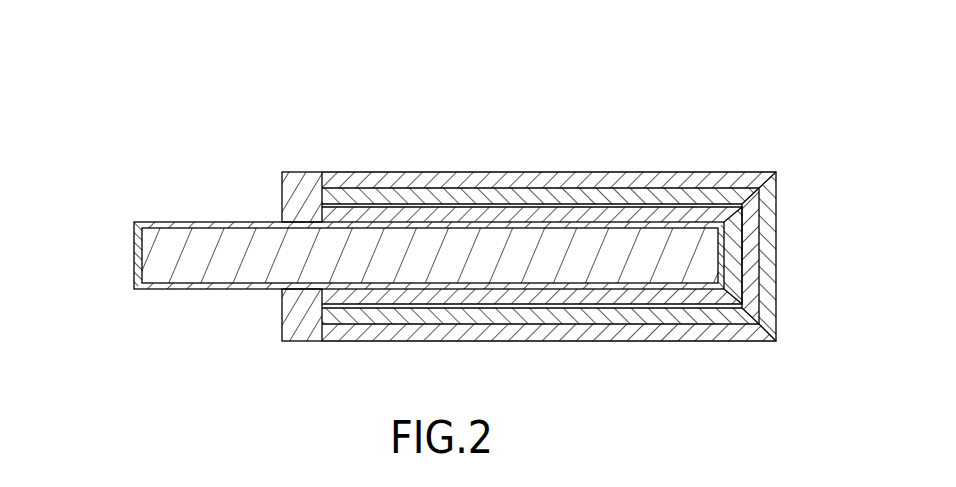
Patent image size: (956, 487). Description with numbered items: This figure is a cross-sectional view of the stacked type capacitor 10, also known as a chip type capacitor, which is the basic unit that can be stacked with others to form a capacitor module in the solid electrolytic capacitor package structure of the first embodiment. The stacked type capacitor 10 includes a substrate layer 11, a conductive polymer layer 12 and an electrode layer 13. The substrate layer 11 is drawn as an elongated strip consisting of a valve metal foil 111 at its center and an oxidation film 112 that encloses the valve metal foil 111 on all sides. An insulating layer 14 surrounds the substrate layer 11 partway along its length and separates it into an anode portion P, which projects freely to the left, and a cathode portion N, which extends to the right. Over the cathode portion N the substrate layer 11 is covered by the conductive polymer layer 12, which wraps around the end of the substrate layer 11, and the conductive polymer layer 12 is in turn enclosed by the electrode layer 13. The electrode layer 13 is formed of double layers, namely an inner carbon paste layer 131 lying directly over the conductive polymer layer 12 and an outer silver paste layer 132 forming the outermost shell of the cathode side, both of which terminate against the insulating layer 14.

The stacked type capacitor 10 is at (207, 73).
The substrate layer 11 is at (258, 357).
The valve metal foil 111 is at (237, 272).
The oxidation film 112 is at (170, 288).
The conductive polymer layer 12 is at (731, 236).
The electrode layer 13 is at (748, 118).
The carbon paste layer 131 is at (651, 194).
The silver paste layer 132 is at (716, 181).
The insulating layer 14 is at (297, 188).
The cathode portion N is at (555, 165).
The anode portion P is at (122, 218).